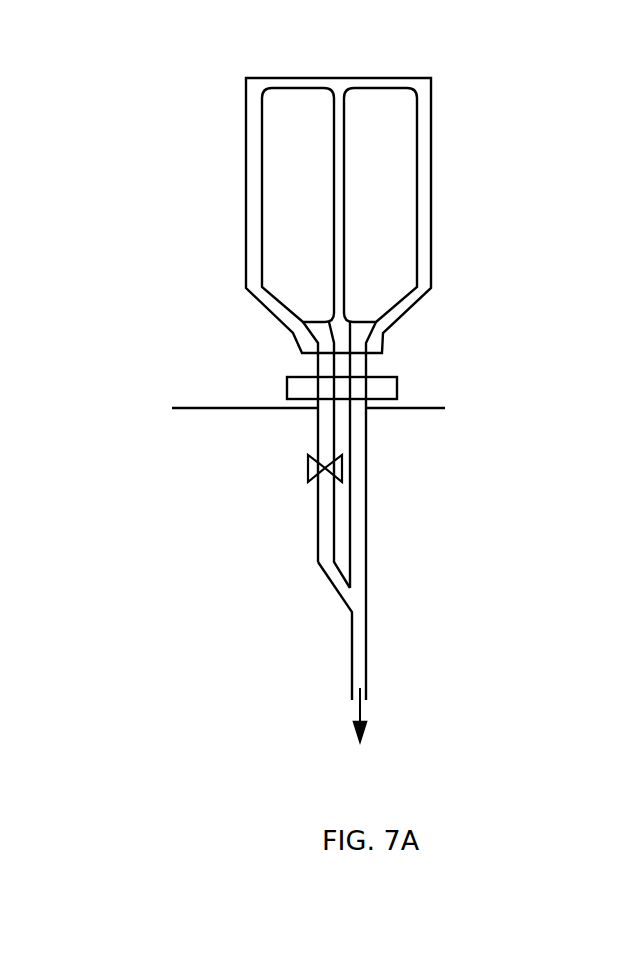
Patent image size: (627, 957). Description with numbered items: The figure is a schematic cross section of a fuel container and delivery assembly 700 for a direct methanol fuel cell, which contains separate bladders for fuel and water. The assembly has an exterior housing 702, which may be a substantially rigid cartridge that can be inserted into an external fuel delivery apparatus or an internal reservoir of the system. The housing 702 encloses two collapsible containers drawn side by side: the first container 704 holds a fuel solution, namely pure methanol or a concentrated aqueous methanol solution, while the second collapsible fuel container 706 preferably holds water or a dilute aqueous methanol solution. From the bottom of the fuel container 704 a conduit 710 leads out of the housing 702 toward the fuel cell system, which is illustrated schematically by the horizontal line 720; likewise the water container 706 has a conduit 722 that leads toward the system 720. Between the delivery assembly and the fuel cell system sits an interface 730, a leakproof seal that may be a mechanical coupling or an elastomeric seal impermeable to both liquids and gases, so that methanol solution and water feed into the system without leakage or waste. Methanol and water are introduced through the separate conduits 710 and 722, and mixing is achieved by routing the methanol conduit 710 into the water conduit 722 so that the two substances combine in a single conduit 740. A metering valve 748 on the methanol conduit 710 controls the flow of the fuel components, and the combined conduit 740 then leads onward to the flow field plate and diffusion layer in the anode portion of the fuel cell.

The fuel container and delivery assembly 700 is at (602, 100).
The exterior housing 702 is at (434, 294).
The first container 704 is at (273, 203).
The second collapsible fuel container 706 is at (403, 182).
The conduit 710 is at (313, 367).
The conduit 722 is at (367, 367).
The interface 730 is at (398, 390).
The fuel cell system 720 is at (193, 408).
The valve 748 is at (308, 468).
The single conduit 740 is at (363, 645).